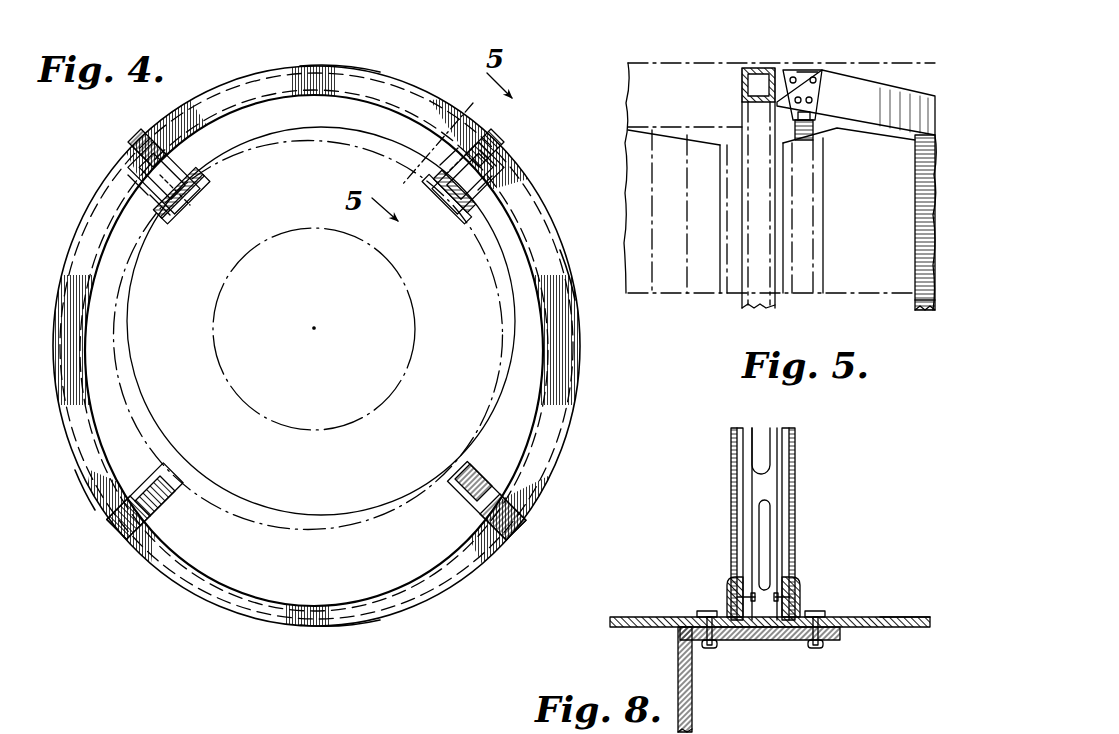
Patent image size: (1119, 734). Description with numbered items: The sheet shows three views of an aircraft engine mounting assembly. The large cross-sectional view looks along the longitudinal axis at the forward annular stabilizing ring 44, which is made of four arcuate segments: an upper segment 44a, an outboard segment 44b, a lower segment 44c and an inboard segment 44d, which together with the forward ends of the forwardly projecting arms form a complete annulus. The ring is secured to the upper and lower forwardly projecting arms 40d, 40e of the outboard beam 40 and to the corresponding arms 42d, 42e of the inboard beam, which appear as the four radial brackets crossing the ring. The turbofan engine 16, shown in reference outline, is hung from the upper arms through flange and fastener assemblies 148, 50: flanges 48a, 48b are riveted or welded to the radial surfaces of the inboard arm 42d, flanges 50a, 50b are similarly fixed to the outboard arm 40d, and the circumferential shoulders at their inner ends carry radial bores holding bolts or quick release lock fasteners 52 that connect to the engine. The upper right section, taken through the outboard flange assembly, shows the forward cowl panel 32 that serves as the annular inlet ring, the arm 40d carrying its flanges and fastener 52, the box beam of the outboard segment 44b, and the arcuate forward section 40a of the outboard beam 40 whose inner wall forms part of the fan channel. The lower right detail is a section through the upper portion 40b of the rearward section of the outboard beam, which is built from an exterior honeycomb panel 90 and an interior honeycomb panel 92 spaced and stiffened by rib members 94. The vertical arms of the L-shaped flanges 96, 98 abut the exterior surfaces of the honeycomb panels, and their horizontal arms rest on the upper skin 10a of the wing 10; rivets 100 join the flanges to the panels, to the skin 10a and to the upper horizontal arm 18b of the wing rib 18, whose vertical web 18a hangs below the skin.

In FIG. 8, the wing 10 is at (876, 622).
In FIG. 8, the upper skin 10a is at (895, 627).
In FIG. 4, the turbofan engine 16 is at (170, 438).
In FIG. 5, the turbofan engine 16 is at (662, 126).
In FIG. 8, the wing rib 18 is at (764, 679).
In FIG. 8, the vertical web 18a is at (686, 677).
In FIG. 8, the upper horizontal arm 18b is at (790, 642).
In FIG. 5, the forward cowl panel 32 is at (680, 62).
In FIG. 5, the outboard beam 40 is at (912, 228).
In FIG. 5, the forward section 40a is at (928, 302).
In FIG. 8, the upper portion of the rearward section 40b is at (759, 504).
In FIG. 4, the upper forwardly projecting arm 40d is at (490, 155).
In FIG. 5, the upper forwardly projecting arm 40d is at (870, 92).
In FIG. 4, the lower forwardly projecting arm 40e is at (475, 500).
In FIG. 4, the upper forwardly projecting arm 42d is at (133, 146).
In FIG. 4, the lower forwardly projecting arm 42e is at (165, 500).
In FIG. 4, the forward annular stabilizing ring 44 is at (280, 72).
In FIG. 4, the upper segment 44a is at (340, 80).
In FIG. 4, the outboard segment 44b is at (562, 262).
In FIG. 5, the outboard segment 44b is at (745, 125).
In FIG. 4, the lower segment 44c is at (345, 612).
In FIG. 4, the inboard segment 44d is at (108, 470).
In FIG. 4, the flange 48a is at (130, 190).
In FIG. 4, the flange 48b is at (170, 150).
In FIG. 4, the flange and fastener assembly 50 is at (492, 207).
In FIG. 5, the flange and fastener assembly 50 is at (797, 68).
In FIG. 4, the flange 50a is at (497, 190).
In FIG. 4, the flange 50b is at (453, 148).
In FIG. 5, the flange 50b is at (810, 70).
In FIG. 4, the fastener 52 is at (192, 200).
In FIG. 5, the fastener 52 is at (800, 145).
In FIG. 8, the exterior honeycomb panel 90 is at (790, 528).
In FIG. 8, the interior honeycomb panel 92 is at (735, 527).
In FIG. 8, the rib member 94 is at (765, 482).
In FIG. 8, the L-shaped flange 96 is at (800, 580).
In FIG. 8, the L-shaped flange 98 is at (730, 580).
In FIG. 8, the rivet 100 is at (709, 610).
In FIG. 4, the flange and fastener assembly 148 is at (135, 205).